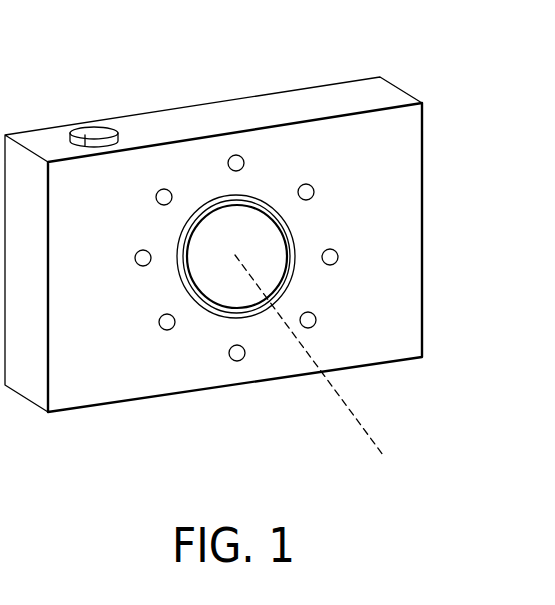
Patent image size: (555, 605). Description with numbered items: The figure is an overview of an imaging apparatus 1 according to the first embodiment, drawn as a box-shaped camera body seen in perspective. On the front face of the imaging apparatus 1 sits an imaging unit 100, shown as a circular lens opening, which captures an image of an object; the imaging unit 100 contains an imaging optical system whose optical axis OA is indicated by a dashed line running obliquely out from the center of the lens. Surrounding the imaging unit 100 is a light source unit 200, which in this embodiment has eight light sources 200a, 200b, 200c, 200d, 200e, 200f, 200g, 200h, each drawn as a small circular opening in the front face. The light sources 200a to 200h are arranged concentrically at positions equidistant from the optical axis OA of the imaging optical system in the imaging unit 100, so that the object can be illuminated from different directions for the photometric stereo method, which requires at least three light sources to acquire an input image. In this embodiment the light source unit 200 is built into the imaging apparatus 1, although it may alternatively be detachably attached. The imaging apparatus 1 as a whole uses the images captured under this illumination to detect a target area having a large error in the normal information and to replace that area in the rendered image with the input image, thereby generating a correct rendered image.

The imaging apparatus 1 is at (480, 51).
The imaging unit 100 is at (262, 201).
The light source unit 200 is at (334, 249).
The light source 200a is at (232, 156).
The light source 200b is at (307, 184).
The light source 200c is at (338, 258).
The light source 200d is at (315, 324).
The light source 200e is at (237, 361).
The light source 200f is at (166, 330).
The light source 200g is at (140, 266).
The light source 200h is at (160, 190).
The optical axis OA is at (345, 397).